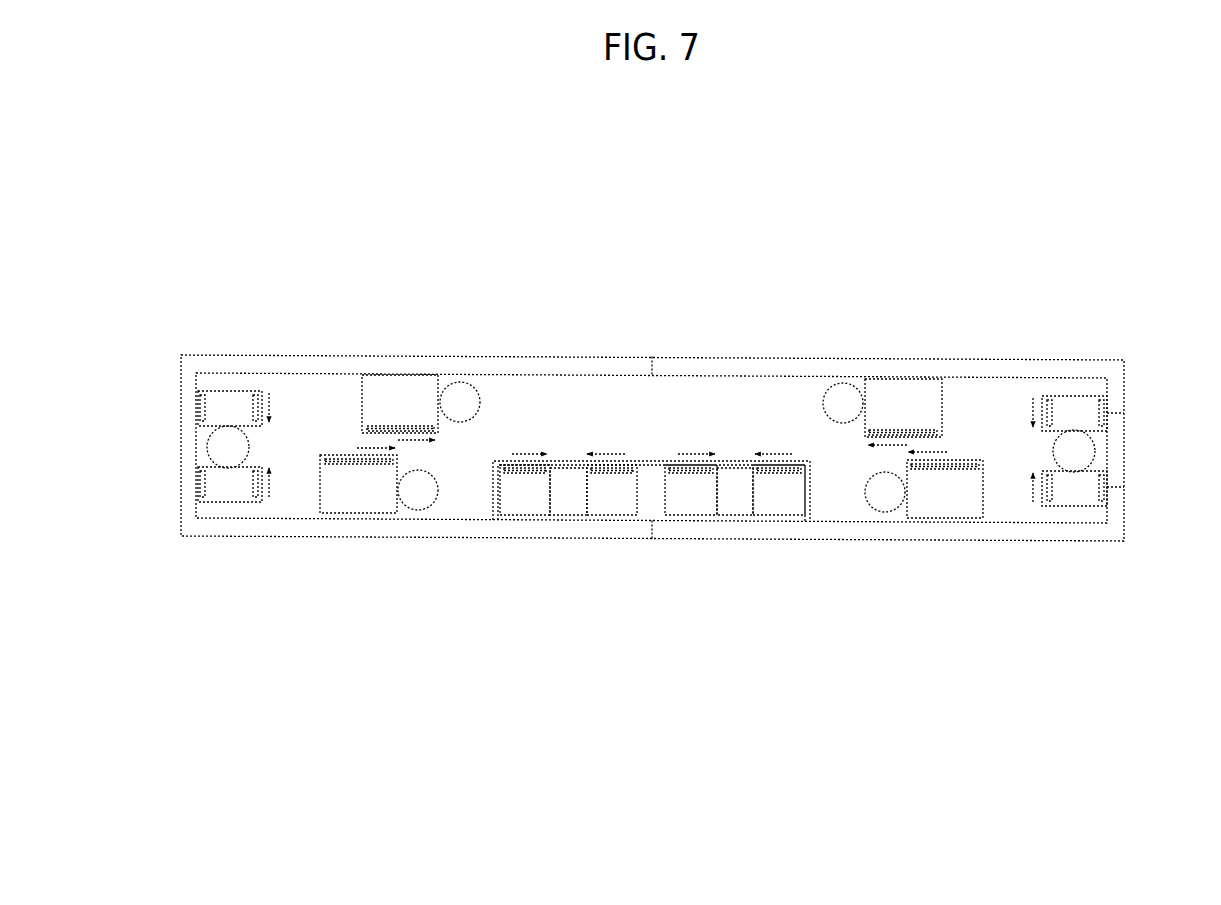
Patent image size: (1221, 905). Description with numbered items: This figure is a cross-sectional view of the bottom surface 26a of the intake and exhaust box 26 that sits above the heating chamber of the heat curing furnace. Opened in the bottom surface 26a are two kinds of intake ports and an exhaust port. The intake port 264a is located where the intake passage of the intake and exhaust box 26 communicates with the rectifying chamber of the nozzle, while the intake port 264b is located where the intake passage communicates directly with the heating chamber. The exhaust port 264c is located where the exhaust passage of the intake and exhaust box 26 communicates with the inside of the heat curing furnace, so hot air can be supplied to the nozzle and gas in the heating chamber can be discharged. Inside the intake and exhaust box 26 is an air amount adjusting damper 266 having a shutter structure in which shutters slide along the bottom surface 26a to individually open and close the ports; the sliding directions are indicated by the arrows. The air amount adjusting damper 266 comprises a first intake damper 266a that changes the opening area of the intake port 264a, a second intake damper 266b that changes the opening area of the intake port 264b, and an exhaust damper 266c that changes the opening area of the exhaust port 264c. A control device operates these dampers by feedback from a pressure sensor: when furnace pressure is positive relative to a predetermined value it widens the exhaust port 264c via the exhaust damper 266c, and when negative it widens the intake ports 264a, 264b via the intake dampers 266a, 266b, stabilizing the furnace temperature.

The intake and exhaust box 26 is at (680, 357).
The bottom surface 26a is at (583, 405).
The intake port 264a is at (222, 450).
The intake port 264b is at (418, 490).
The exhaust port 264c is at (572, 490).
The air amount adjusting damper 266 is at (421, 368).
The first intake damper 266a is at (228, 400).
The second intake damper 266b is at (362, 490).
The exhaust damper 266c is at (517, 490).